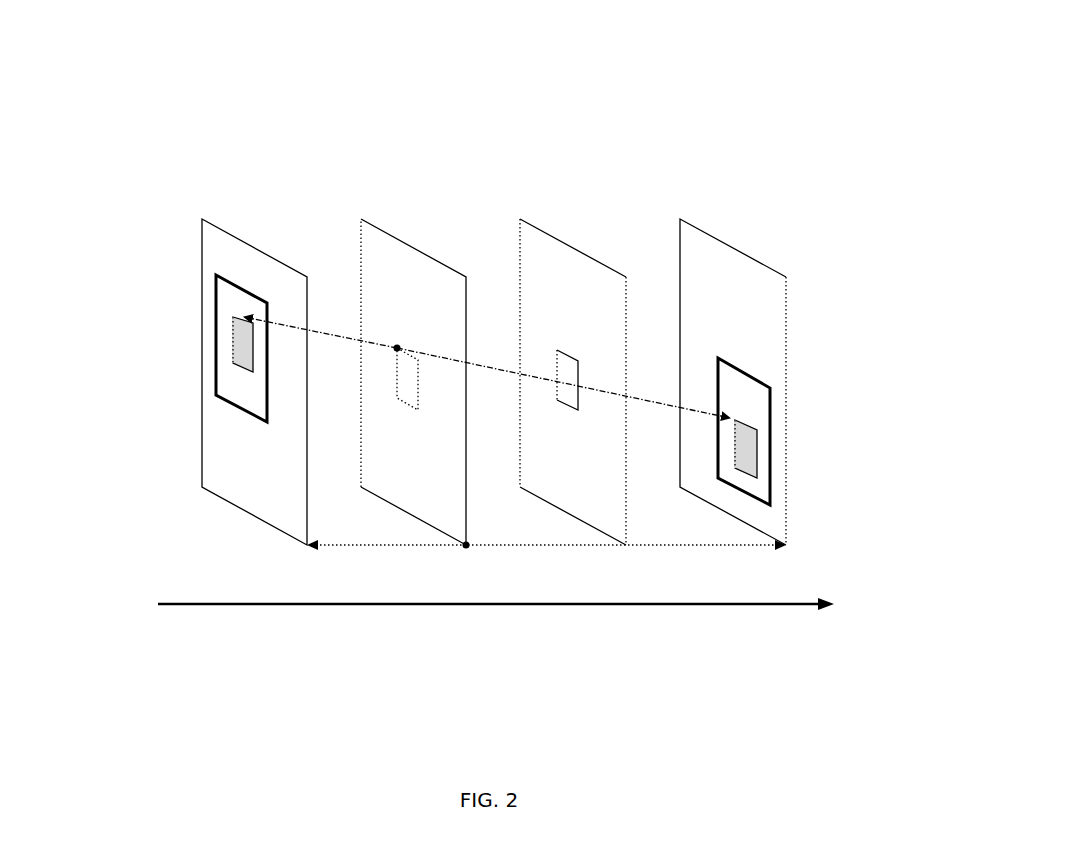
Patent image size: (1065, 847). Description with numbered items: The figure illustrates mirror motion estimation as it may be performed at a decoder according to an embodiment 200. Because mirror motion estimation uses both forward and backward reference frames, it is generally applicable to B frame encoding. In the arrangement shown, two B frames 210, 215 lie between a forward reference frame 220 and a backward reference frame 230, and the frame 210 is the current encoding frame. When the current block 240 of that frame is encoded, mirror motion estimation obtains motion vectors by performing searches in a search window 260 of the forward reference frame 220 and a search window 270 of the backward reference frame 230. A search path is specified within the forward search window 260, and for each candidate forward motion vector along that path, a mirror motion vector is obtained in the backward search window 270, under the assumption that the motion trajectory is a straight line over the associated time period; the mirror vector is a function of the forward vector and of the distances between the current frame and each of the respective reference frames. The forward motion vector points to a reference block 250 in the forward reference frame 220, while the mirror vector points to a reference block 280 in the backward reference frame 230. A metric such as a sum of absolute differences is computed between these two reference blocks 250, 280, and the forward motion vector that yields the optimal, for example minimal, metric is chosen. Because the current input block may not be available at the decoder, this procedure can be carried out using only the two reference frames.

The mirror motion estimation embodiment 200 is at (716, 82).
The B frame 210 is at (410, 262).
The B frame 215 is at (567, 262).
The forward reference frame 220 is at (255, 262).
The backward reference frame 230 is at (770, 265).
The current block 240 is at (408, 407).
The reference block 250 is at (228, 342).
The search window 260 is at (230, 418).
The search window 270 is at (773, 405).
The reference block 280 is at (757, 467).